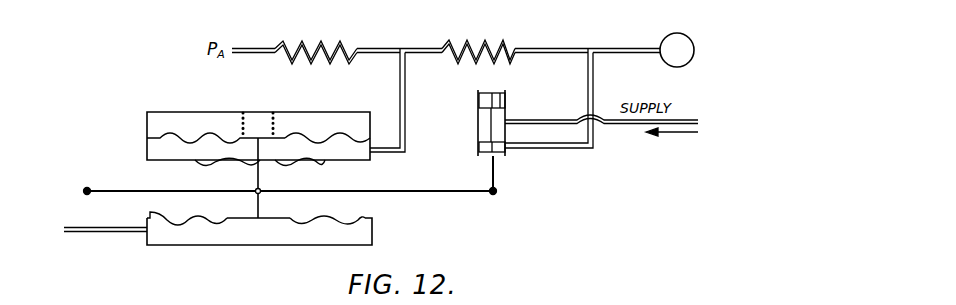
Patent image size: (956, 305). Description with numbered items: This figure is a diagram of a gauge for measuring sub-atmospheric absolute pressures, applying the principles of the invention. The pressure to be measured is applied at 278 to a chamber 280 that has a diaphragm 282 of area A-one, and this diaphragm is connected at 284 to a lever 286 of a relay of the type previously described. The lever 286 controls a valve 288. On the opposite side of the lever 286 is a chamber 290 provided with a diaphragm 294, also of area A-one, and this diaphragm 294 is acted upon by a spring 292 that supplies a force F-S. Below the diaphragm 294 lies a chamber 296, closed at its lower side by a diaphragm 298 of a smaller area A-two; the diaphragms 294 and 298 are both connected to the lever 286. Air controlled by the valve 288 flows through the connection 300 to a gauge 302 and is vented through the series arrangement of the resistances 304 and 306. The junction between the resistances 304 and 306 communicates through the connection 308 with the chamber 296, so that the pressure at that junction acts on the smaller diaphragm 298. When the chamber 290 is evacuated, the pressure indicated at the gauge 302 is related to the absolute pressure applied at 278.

The pressure application point 278 is at (109, 230).
The chamber 280 is at (236, 238).
The diaphragm 282 is at (190, 222).
The connection 284 is at (262, 191).
The lever 286 is at (423, 191).
The valve 288 is at (478, 120).
The chamber 290 is at (333, 122).
The spring 292 is at (243, 118).
The diaphragm 294 is at (228, 142).
The chamber 296 is at (160, 147).
The diaphragm 298 is at (302, 150).
The connection 300 is at (595, 82).
The gauge 302 is at (684, 27).
The resistance 304 is at (473, 44).
The resistance 306 is at (317, 42).
The connection 308 is at (408, 82).